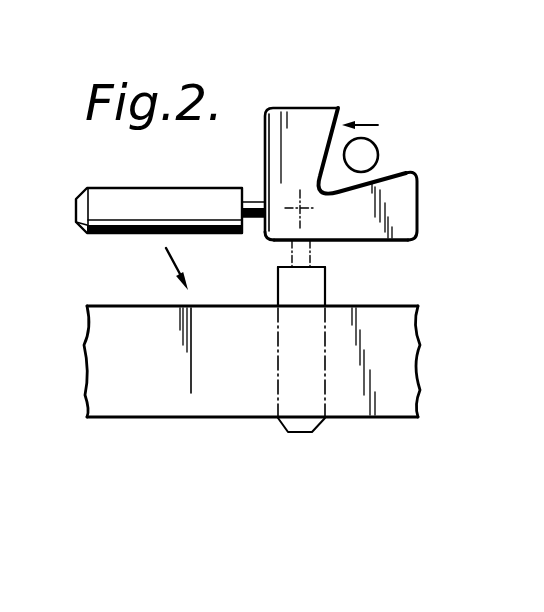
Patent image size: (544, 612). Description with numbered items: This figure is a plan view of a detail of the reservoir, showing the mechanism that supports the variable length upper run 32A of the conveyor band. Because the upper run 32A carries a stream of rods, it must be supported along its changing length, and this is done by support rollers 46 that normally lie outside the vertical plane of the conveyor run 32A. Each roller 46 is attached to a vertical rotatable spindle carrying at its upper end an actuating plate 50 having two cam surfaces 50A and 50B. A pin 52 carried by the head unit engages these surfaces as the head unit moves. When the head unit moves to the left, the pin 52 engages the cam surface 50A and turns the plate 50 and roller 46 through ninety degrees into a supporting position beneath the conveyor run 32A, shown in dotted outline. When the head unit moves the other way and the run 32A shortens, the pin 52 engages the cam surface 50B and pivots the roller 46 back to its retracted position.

The support roller 46 is at (145, 207).
The actuating plate 50 is at (302, 126).
The cam surface 50A is at (338, 122).
The cam surface 50B is at (397, 172).
The pin 52 is at (367, 148).
The upper run of conveyor 32A is at (176, 379).